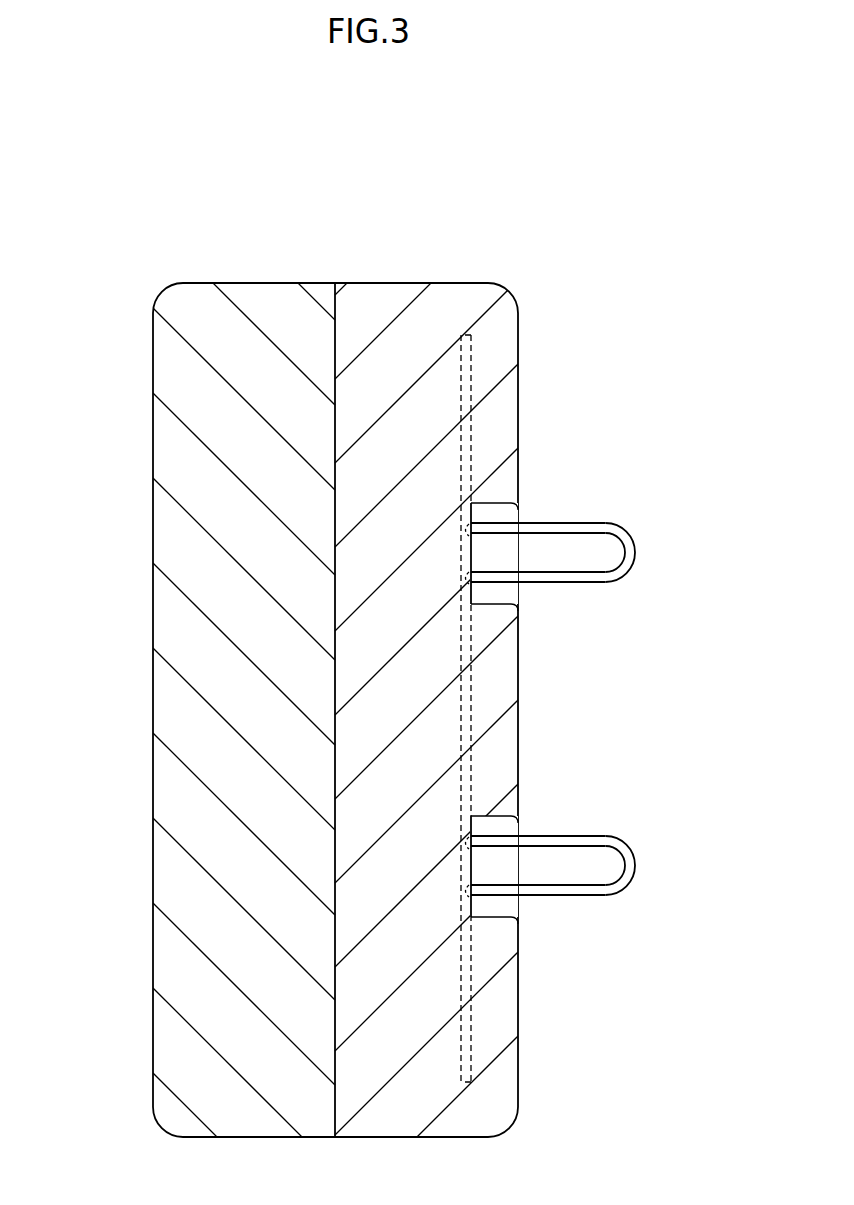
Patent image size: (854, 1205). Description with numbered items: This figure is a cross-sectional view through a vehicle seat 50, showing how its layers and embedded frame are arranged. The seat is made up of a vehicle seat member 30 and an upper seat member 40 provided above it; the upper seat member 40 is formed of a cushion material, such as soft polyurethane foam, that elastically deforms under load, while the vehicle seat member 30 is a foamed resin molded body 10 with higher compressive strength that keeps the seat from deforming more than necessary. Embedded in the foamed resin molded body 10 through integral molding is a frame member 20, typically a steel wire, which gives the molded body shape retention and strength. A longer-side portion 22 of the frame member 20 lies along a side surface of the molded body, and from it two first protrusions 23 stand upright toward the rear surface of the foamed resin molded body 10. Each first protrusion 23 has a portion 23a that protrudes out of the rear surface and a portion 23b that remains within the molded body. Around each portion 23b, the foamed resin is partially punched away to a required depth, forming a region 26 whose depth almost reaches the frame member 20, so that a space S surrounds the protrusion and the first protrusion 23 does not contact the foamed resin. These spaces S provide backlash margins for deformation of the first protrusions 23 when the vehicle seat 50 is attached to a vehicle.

The vehicle seat 50 is at (126, 186).
The upper seat member 40 is at (240, 279).
The foamed resin molded body 10 is at (400, 283).
The vehicle seat member 30 is at (456, 277).
The frame member 20 is at (465, 1019).
The longer-side portion 22 is at (472, 685).
The region 26 is at (503, 511).
The space S is at (487, 515).
The first protrusion 23 is at (611, 720).
The protruding portion 23a is at (598, 580).
The portion other than the protruding portion 23b is at (500, 578).